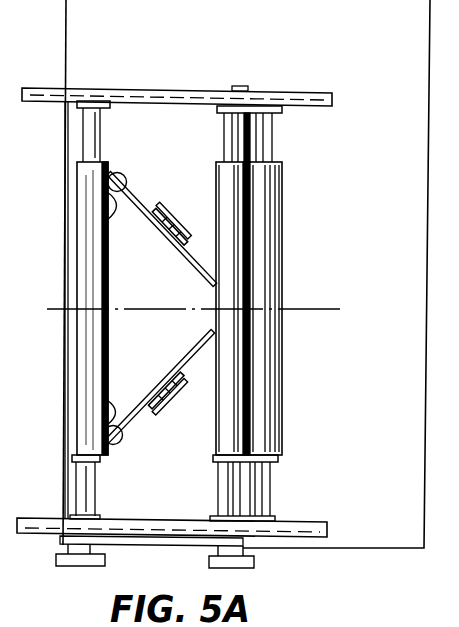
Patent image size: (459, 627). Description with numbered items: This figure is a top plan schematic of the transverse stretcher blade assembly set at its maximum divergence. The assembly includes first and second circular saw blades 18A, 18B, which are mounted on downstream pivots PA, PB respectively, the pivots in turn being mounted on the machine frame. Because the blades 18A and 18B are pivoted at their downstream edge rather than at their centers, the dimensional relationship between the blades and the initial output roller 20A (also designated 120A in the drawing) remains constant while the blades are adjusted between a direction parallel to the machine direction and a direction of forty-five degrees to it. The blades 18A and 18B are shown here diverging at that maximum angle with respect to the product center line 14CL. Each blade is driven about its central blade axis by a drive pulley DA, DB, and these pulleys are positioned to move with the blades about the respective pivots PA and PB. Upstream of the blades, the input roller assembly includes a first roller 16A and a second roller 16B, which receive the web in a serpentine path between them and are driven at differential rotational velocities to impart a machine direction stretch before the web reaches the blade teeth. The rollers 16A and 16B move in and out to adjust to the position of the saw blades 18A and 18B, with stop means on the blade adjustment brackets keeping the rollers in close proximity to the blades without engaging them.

The initial output roller 20A is at (177, 123).
The upper mounting plate (alternate embodiment) 120A is at (177, 96).
The pivot PB is at (111, 176).
The drive pulley DB is at (162, 198).
The second circular saw blade 18B is at (110, 217).
The first roller 16A is at (280, 178).
The second roller 16B is at (235, 231).
The product center line 14CL is at (297, 308).
The first circular saw blade 18A is at (140, 400).
The drive pulley DA is at (176, 398).
The pivot PA is at (118, 442).